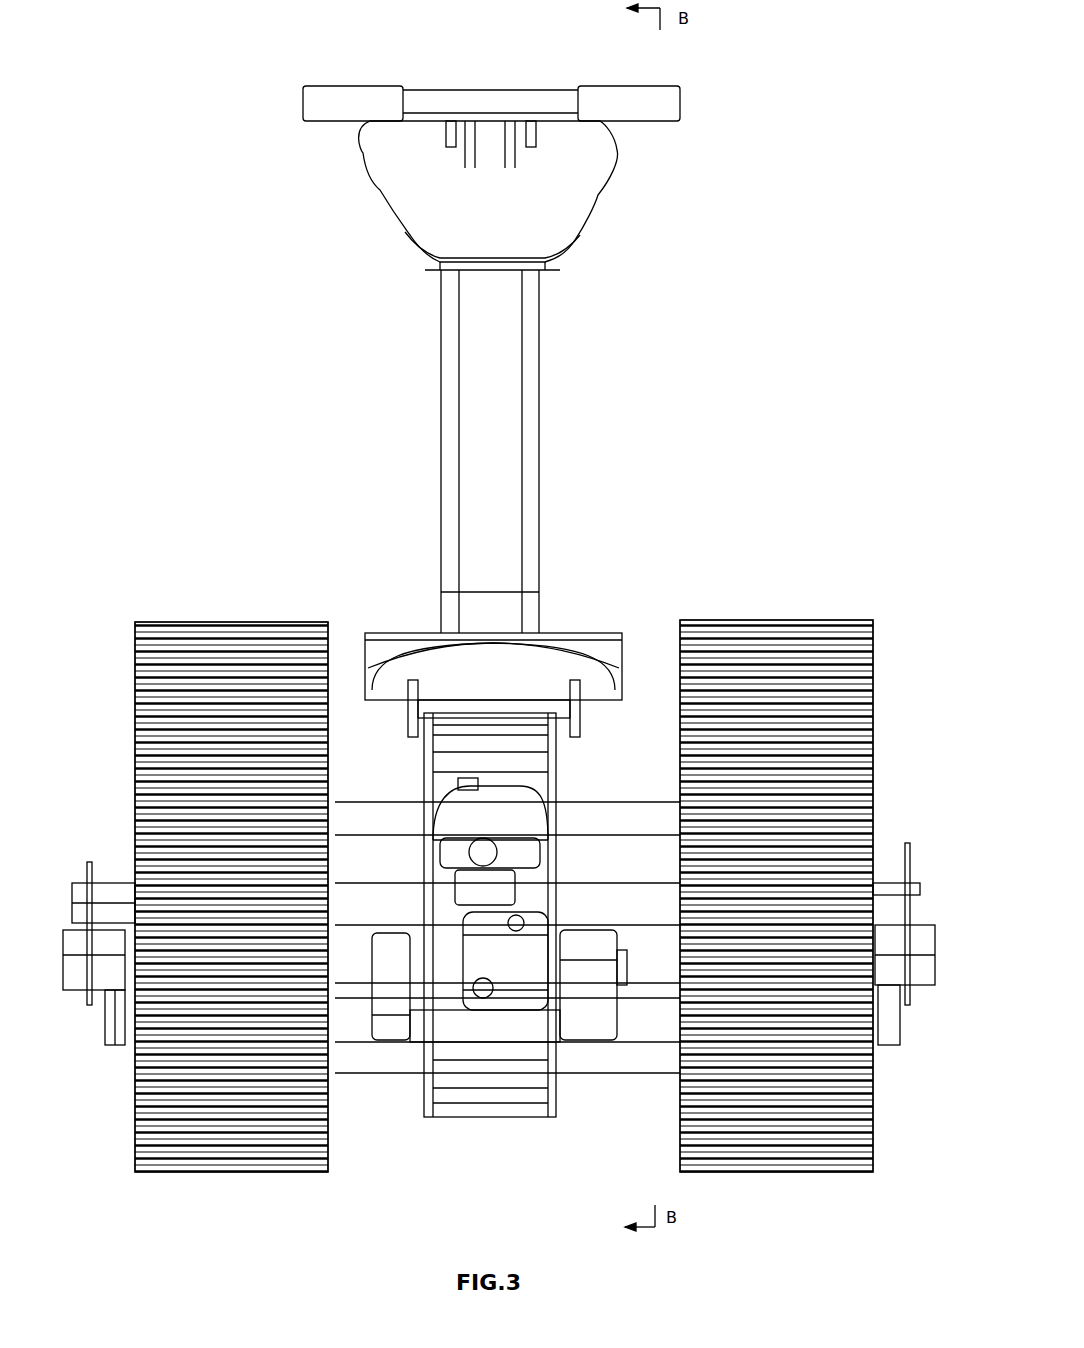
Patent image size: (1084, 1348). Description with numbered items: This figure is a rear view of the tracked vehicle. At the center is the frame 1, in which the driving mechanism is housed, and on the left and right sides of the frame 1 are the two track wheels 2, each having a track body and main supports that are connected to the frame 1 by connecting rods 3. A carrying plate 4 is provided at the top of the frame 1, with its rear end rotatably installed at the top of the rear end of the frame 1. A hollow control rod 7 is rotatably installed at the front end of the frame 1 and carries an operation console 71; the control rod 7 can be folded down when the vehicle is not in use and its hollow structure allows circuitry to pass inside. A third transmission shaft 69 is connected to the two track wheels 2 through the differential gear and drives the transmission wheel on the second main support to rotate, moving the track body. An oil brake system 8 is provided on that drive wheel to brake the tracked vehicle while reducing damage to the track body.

The frame 1 is at (550, 1100).
The track wheels 2 is at (778, 560).
The connecting rod 3 is at (355, 905).
The carrying plate 4 is at (605, 637).
The control rod 7 is at (540, 410).
The operation console 71 is at (582, 198).
The oil brake system 8 is at (914, 1036).
The third transmission shaft 69 is at (613, 1043).